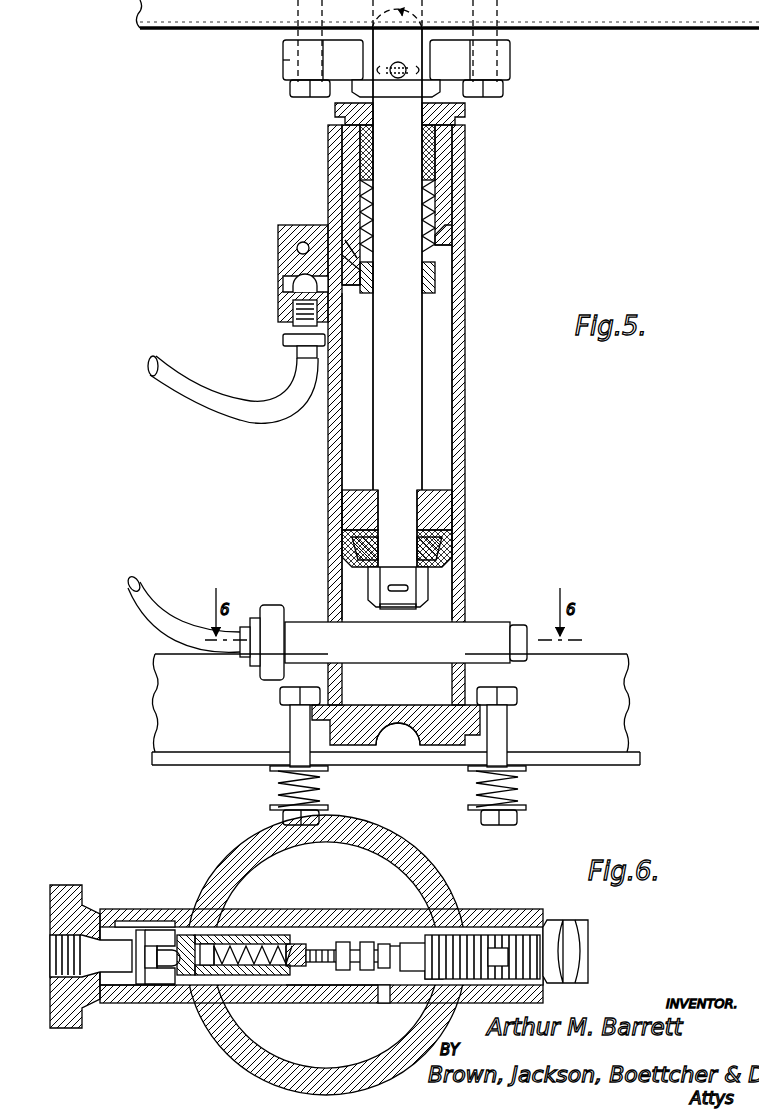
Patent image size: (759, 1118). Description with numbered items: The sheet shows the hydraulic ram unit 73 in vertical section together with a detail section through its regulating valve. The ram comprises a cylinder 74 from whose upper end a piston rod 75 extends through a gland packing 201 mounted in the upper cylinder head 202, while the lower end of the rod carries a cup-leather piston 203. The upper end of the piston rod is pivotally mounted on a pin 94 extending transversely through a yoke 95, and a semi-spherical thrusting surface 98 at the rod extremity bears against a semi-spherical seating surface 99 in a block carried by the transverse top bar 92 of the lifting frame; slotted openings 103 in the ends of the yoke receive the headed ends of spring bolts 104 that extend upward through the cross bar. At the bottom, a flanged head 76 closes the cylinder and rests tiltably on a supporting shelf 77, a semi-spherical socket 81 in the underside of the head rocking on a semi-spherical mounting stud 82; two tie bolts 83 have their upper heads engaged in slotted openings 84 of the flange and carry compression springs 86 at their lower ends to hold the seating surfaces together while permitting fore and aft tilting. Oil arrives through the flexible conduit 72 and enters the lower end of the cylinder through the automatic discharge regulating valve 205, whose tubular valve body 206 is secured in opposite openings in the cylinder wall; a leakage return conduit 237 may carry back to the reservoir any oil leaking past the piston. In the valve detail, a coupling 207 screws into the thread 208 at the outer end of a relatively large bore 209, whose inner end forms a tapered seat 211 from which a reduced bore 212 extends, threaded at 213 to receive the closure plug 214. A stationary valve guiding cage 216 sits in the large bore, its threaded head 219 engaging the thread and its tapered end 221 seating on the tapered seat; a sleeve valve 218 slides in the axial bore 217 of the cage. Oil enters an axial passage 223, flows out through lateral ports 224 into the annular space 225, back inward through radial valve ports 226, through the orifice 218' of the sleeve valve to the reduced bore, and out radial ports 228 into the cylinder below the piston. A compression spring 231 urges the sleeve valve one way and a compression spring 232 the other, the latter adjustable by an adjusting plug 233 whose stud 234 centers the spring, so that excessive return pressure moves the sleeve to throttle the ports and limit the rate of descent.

In FIG. 5, the transverse top bar 92 is at (175, 29).
In FIG. 5, the semi-spherical thrusting surface 98 is at (380, 14).
In FIG. 5, the semi-spherical seating surface 99 is at (412, 12).
In FIG. 5, the spring bolts 104 is at (300, 34).
In FIG. 5, the slotted openings 103 is at (323, 56).
In FIG. 5, the yoke 95 is at (290, 66).
In FIG. 5, the pin 94 is at (372, 88).
In FIG. 5, the cylinder 74 is at (459, 390).
In FIG. 5, the upper cylinder head 202 is at (335, 146).
In FIG. 5, the gland packing 201 is at (440, 163).
In FIG. 5, the piston rod 75 is at (410, 148).
In FIG. 5, the leakage return conduit 237 is at (186, 366).
In FIG. 5, the hydraulic ram unit 73 is at (300, 206).
In FIG. 6, the hydraulic ram unit 73 is at (208, 860).
In FIG. 5, the piston 203 is at (340, 533).
In FIG. 5, the automatic discharge regulating valve 205 is at (318, 625).
In FIG. 6, the automatic discharge regulating valve 205 is at (306, 904).
In FIG. 5, the tubular valve body 206 is at (383, 642).
In FIG. 6, the tubular valve body 206 is at (372, 908).
In FIG. 5, the flexible conduit 72 is at (152, 595).
In FIG. 5, the supporting shelf 77 is at (170, 705).
In FIG. 5, the slotted openings 84 is at (285, 712).
In FIG. 5, the flanged head 76 is at (372, 738).
In FIG. 5, the tie bolts 83 is at (298, 735).
In FIG. 5, the semi-spherical socket 81 is at (382, 752).
In FIG. 5, the semi-spherical mounting stud 82 is at (408, 748).
In FIG. 5, the compression springs 86 is at (280, 790).
In FIG. 6, the coupling 207 is at (68, 890).
In FIG. 6, the thread 208 is at (117, 1004).
In FIG. 6, the threaded head 219 is at (141, 930).
In FIG. 6, the axial passage 223 is at (150, 998).
In FIG. 6, the lateral ports 224 is at (182, 972).
In FIG. 6, the relatively large bore 209 is at (207, 1002).
In FIG. 6, the stationary valve guiding cage 216 is at (236, 1004).
In FIG. 6, the axial bore 217 is at (265, 946).
In FIG. 6, the annular space 225 is at (188, 910).
In FIG. 6, the compression spring 231 is at (240, 944).
In FIG. 6, the radial valve ports 226 is at (280, 944).
In FIG. 6, the sleeve valve 218 is at (317, 915).
In FIG. 6, the orifice 218' is at (315, 999).
In FIG. 6, the tapered end 221 is at (346, 946).
In FIG. 6, the compression spring 232 is at (384, 944).
In FIG. 6, the radial ports 228 is at (384, 1003).
In FIG. 6, the reduced bore 212 is at (418, 984).
In FIG. 6, the tapered seat 211 is at (352, 986).
In FIG. 6, the stud 234 is at (432, 955).
In FIG. 6, the adjusting plug 233 is at (492, 945).
In FIG. 6, the closure plug 214 is at (590, 952).
In FIG. 6, the threaded bore 213 is at (440, 980).